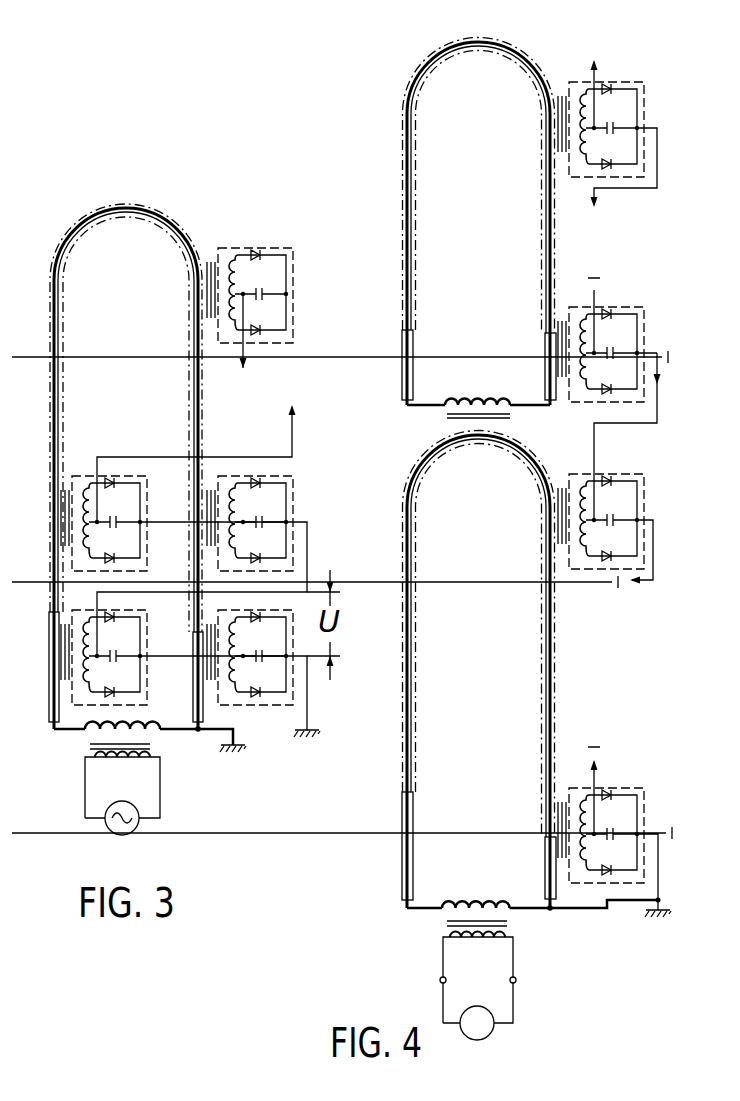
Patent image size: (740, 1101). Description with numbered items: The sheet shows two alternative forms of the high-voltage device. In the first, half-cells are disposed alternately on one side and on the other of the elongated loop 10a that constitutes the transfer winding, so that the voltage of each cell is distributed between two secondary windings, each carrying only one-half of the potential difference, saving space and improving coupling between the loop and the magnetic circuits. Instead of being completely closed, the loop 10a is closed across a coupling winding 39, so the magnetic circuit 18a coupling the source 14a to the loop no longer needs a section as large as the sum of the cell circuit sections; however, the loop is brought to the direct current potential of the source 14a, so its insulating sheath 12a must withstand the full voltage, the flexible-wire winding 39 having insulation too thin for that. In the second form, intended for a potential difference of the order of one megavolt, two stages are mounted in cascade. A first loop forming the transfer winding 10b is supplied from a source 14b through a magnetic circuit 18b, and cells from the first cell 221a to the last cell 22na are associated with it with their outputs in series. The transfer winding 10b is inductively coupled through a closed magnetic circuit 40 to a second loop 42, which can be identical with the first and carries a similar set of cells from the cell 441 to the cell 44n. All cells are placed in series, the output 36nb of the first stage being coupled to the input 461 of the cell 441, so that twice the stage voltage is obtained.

In FIG. 3, the loop 10a is at (73, 232).
In FIG. 3, the insulating sheath 12a is at (163, 215).
In FIG. 3, the coupling winding 39 is at (90, 730).
In FIG. 3, the magnetic circuit 18a is at (150, 748).
In FIG. 3, the source 14a is at (139, 822).
In FIG. 4, the second loop 42 is at (411, 90).
In FIG. 4, the closed magnetic circuit 40 is at (450, 418).
In FIG. 4, the transfer winding 10b is at (552, 678).
In FIG. 4, the cell 44n is at (622, 82).
In FIG. 4, the cell 441 is at (624, 307).
In FIG. 4, the input 461 is at (652, 352).
In FIG. 4, the cell 22na is at (332, 542).
In FIG. 4, the output 36nb is at (578, 479).
In FIG. 4, the cell 221a is at (620, 788).
In FIG. 4, the magnetic circuit 18b is at (508, 925).
In FIG. 4, the source 14b is at (490, 1028).